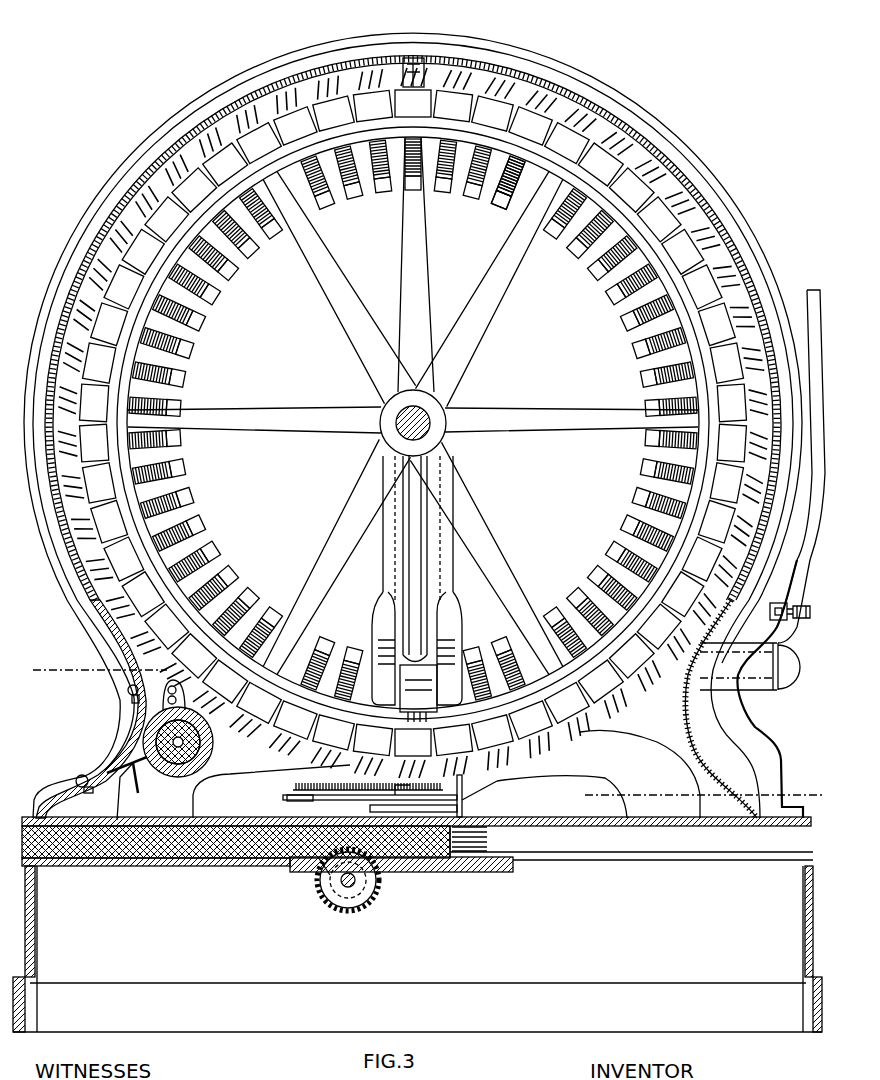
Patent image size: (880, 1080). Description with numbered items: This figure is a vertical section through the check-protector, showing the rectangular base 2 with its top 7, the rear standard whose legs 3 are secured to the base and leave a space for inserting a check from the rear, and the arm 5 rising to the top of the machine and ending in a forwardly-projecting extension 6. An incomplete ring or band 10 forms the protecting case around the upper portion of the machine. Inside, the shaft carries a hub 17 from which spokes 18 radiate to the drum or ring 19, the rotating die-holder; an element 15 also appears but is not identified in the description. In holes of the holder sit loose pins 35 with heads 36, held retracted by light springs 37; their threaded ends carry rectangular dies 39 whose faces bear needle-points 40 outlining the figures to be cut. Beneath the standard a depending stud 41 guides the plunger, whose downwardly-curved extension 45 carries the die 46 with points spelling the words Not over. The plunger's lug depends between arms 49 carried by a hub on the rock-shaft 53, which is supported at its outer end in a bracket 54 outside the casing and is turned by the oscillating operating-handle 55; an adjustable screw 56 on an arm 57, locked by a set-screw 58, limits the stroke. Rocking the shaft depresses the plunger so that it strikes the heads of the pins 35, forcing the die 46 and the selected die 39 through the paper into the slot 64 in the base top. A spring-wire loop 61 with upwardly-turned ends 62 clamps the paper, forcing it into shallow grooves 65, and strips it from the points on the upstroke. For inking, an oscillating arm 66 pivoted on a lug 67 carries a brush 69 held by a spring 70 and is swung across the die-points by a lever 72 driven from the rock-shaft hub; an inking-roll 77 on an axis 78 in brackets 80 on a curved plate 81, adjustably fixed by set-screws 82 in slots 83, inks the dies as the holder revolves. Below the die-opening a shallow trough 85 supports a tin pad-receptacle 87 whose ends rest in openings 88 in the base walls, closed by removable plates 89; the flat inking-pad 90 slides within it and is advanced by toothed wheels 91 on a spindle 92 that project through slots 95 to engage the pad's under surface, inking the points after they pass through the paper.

The base 2 is at (776, 1030).
The legs 3 is at (632, 748).
The arm 5 is at (430, 290).
The forwardly-projecting extension 6 is at (416, 58).
The top 7 is at (212, 808).
The incomplete ring or band 10 is at (512, 72).
The hub 15 is at (442, 408).
The hub 17 is at (383, 410).
The spokes 18 is at (345, 310).
The drum, cylinder, or ring 19 is at (165, 400).
The loose pins 35 is at (205, 250).
The heads 36 is at (365, 195).
The light springs 37 is at (492, 195).
The dies 39 is at (150, 192).
The needle-points 40 is at (170, 175).
The depending stud 41 is at (418, 528).
The downwardly-curved arm or extension 45 is at (416, 625).
The die 46 is at (418, 690).
The arms 49 is at (372, 618).
The rock-shaft 53 is at (490, 660).
The bracket 54 is at (755, 728).
The oscillating operating-handle 55 is at (801, 466).
The adjustable screw 56 is at (777, 603).
The arm 57 is at (780, 640).
The set-screw 58 is at (804, 599).
The loop 61 is at (479, 795).
The upwardly-turned ends 62 is at (388, 653).
The slot 64 is at (480, 807).
The shallow grooves 65 is at (370, 810).
The oscillating arm 66 is at (462, 790).
The lug 67 is at (462, 797).
The brush 69 is at (293, 790).
The spring 70 is at (305, 801).
The lever 72 is at (412, 792).
The inking-roll 77 is at (212, 757).
The axis 78 is at (148, 782).
The brackets 80 is at (142, 787).
The curved plate 81 is at (135, 730).
The set-screws 82 is at (128, 690).
The slots 83 is at (132, 700).
The shallow trough 85 is at (452, 872).
The pad-receptacle 87 is at (580, 860).
The openings 88 is at (40, 868).
The removable plates 89 is at (35, 885).
The flat inking-pad 90 is at (225, 858).
The toothed wheels 91 is at (368, 893).
The spindle 92 is at (348, 882).
The slots 95 is at (318, 880).